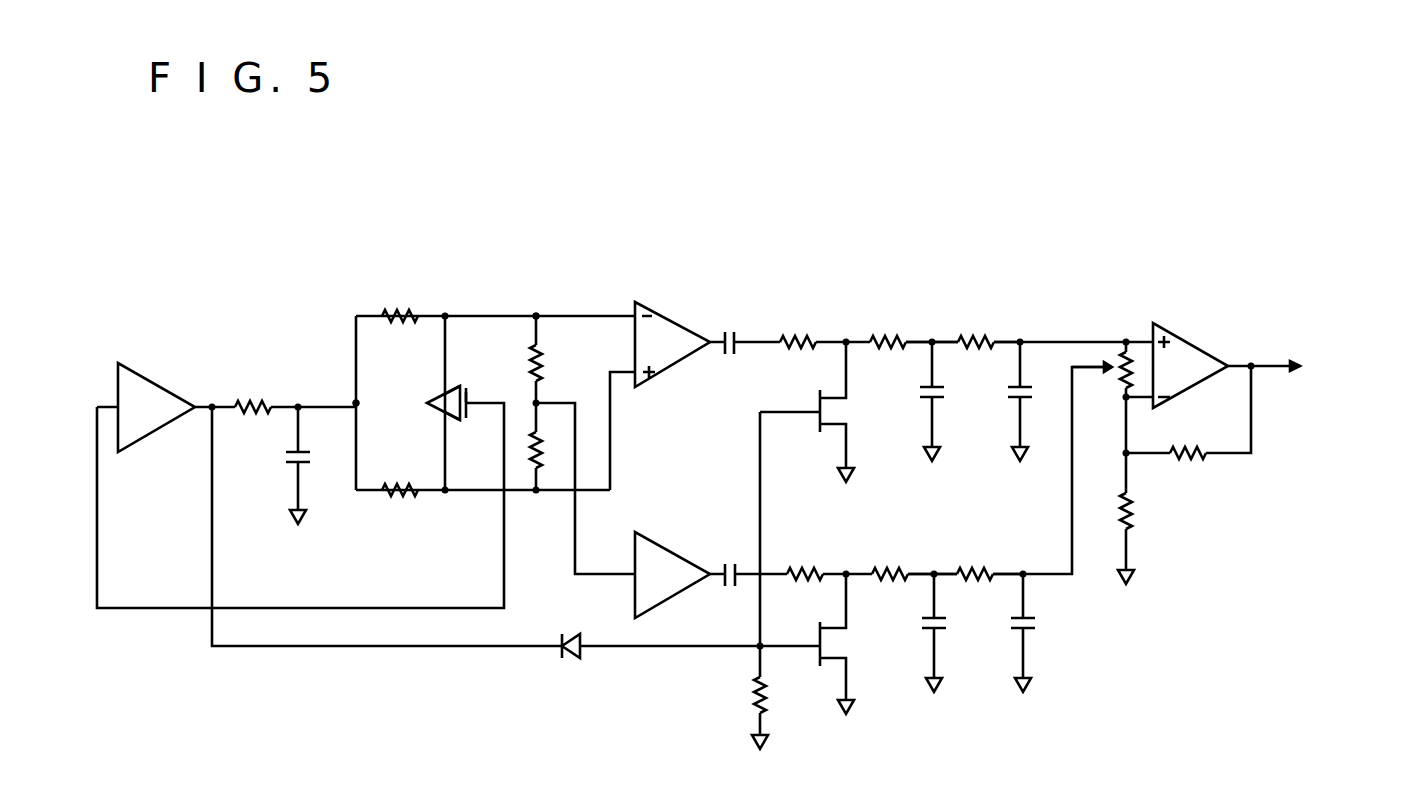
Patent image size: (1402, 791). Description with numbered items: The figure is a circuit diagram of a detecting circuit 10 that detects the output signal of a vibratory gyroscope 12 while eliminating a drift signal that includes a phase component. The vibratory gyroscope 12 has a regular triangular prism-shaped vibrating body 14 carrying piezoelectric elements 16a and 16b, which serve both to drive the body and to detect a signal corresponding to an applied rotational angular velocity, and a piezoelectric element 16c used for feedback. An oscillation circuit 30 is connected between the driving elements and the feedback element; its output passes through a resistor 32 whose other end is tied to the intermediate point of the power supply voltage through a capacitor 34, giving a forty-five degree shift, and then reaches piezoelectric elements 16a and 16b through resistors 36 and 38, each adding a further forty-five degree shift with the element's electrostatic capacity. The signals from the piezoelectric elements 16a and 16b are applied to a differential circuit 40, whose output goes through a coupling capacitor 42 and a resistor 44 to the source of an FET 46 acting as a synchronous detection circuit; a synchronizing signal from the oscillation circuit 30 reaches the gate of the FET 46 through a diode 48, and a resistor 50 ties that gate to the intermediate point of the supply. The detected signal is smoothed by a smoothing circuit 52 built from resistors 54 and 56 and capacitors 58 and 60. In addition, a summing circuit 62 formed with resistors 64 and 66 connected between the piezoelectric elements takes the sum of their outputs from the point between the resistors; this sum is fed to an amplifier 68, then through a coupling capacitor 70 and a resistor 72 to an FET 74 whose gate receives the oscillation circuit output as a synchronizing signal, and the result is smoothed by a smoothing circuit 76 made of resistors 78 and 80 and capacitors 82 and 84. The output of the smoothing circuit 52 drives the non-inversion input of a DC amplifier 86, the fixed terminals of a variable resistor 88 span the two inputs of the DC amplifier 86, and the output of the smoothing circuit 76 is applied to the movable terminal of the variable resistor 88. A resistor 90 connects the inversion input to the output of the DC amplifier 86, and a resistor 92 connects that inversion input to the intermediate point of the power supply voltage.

The detecting circuit 10 is at (232, 220).
The vibratory gyroscope 12 is at (420, 403).
The vibrating body 14 is at (466, 420).
The piezoelectric element 16a is at (440, 412).
The piezoelectric element 16b is at (440, 394).
The piezoelectric element 16c is at (483, 378).
The oscillation circuit 30 is at (182, 378).
The resistor 32 is at (246, 398).
The capacitor 34 is at (290, 468).
The resistor 36 is at (397, 497).
The resistor 38 is at (400, 311).
The differential circuit 40 is at (670, 318).
The coupling capacitor 42 is at (736, 332).
The resistor 44 is at (800, 336).
The FET 46 is at (814, 426).
The diode 48 is at (556, 656).
The resistor 50 is at (754, 688).
The smoothing circuit 52 is at (960, 296).
The resistor 54 is at (886, 336).
The resistor 56 is at (990, 336).
The capacitor 58 is at (924, 402).
The capacitor 60 is at (1012, 402).
The summing circuit 62 is at (540, 308).
The resistor 64 is at (542, 362).
The resistor 66 is at (542, 452).
The amplifier 68 is at (658, 552).
The coupling capacitor 70 is at (722, 565).
The resistor 72 is at (796, 568).
The FET 74 is at (814, 660).
The smoothing circuit 76 is at (950, 557).
The resistor 78 is at (880, 568).
The resistor 80 is at (990, 568).
The capacitor 82 is at (928, 634).
The capacitor 84 is at (1016, 634).
The DC amplifier 86 is at (1186, 350).
The variable resistor 88 is at (1118, 382).
The resistor 90 is at (1188, 458).
The resistor 92 is at (1134, 512).